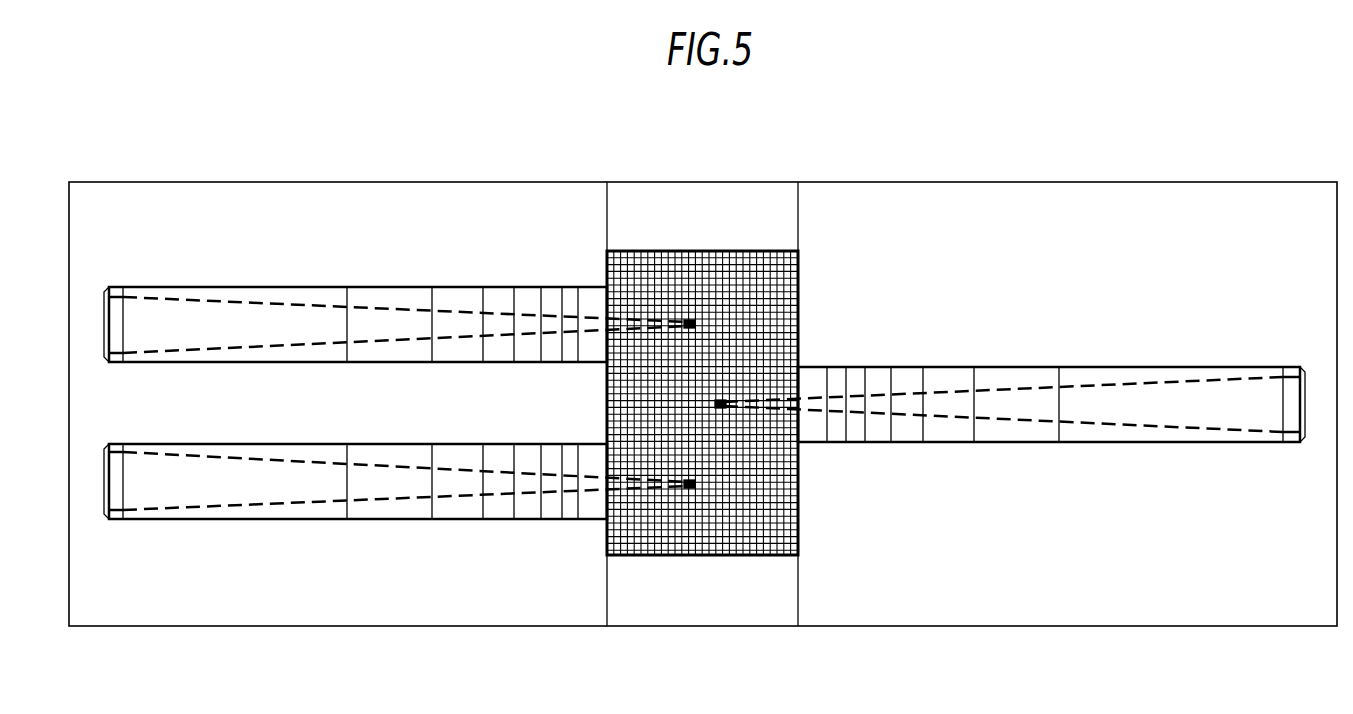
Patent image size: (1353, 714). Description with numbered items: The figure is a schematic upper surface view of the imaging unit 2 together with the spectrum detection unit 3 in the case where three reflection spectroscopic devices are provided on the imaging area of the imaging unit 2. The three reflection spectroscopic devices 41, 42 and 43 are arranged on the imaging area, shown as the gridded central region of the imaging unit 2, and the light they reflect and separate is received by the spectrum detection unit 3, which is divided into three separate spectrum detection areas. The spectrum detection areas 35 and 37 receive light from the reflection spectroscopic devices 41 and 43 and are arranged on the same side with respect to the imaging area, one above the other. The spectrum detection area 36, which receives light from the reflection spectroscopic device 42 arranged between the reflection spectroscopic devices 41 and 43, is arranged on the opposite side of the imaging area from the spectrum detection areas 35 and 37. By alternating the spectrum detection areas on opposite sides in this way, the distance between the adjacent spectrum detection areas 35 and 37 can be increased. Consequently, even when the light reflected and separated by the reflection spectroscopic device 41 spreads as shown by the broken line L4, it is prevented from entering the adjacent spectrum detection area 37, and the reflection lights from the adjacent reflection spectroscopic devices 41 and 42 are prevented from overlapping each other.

The imaging unit 2 is at (688, 627).
The spectrum detection unit 3 is at (386, 627).
The spectrum detection area 35 is at (99, 321).
The spectrum detection area 36 is at (1310, 399).
The spectrum detection area 37 is at (99, 478).
The reflection spectroscopic device 41 is at (689, 320).
The reflection spectroscopic device 42 is at (722, 402).
The reflection spectroscopic device 43 is at (693, 487).
The broken line L4 is at (283, 302).